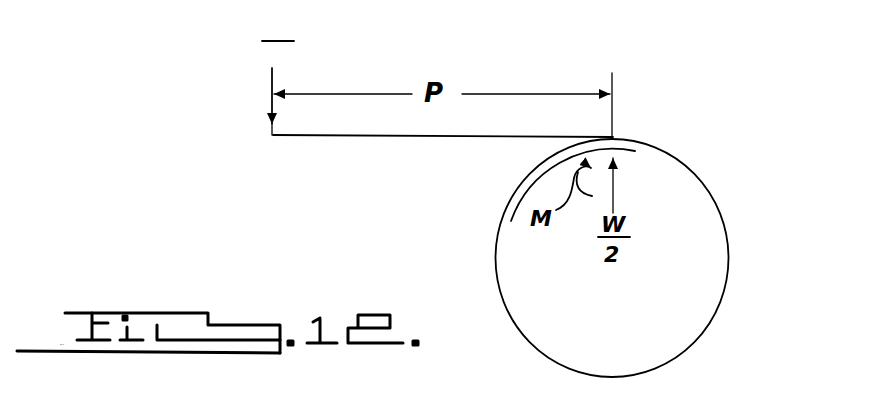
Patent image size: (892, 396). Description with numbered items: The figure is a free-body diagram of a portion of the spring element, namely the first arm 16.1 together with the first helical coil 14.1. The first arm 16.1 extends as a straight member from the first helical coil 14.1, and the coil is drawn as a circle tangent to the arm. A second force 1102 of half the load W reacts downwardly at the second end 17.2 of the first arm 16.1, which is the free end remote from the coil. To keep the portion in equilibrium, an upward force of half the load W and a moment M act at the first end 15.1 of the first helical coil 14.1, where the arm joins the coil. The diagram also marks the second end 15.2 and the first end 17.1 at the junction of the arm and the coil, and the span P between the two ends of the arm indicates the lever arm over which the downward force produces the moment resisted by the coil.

The second force 1102 is at (298, 34).
The first helical coil 14.1 is at (727, 286).
The first end of the first helical coil 15.1 is at (572, 146).
The second contact point / tangent point 15.2 is at (629, 132).
The first arm 16.1 is at (378, 136).
The tangent point at roller 17.1 is at (622, 110).
The second end of the first arm 17.2 is at (270, 144).